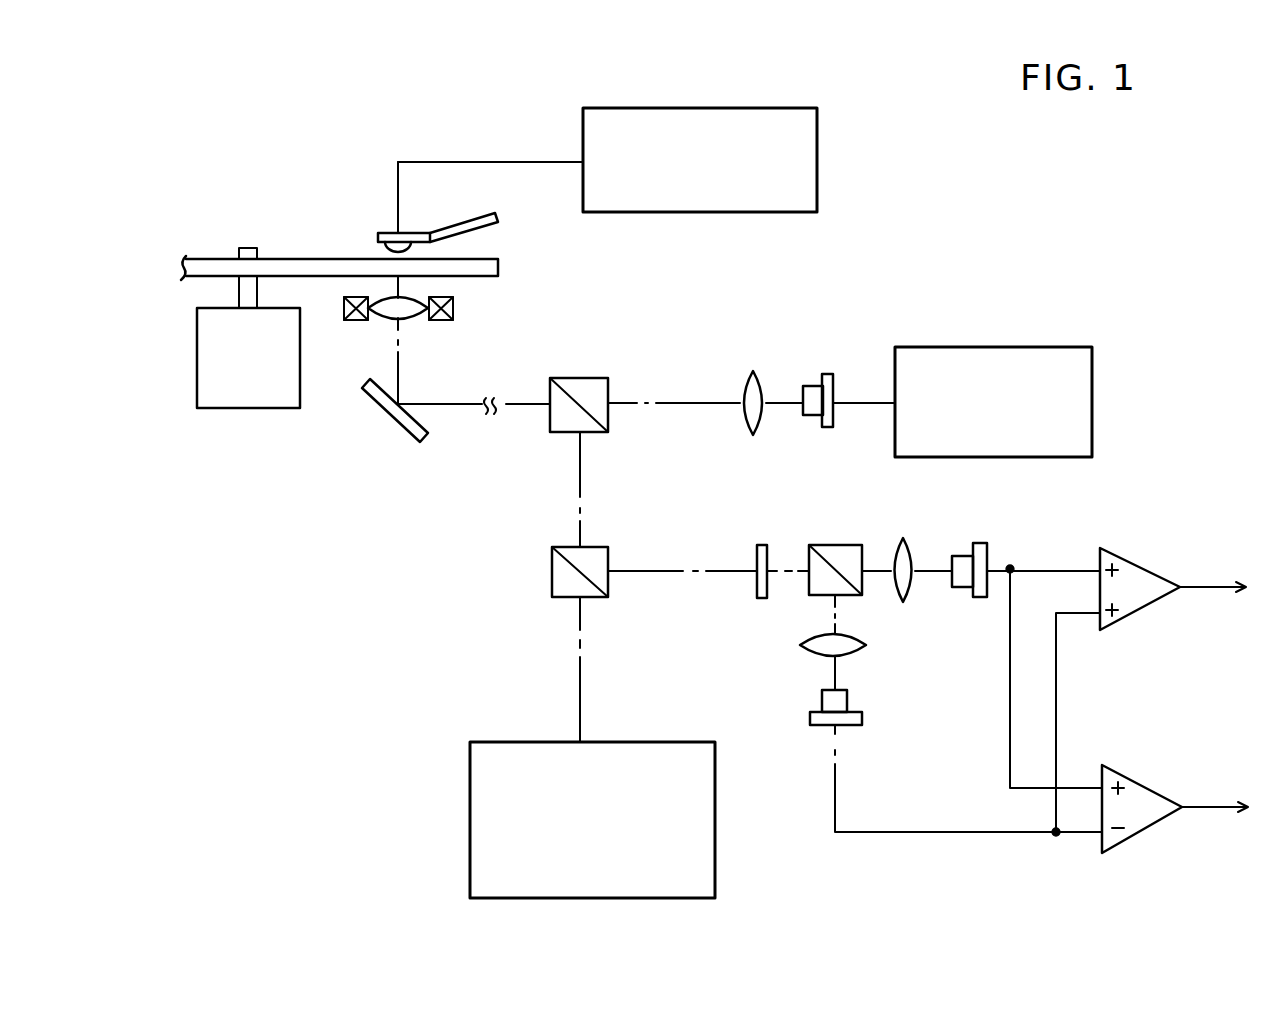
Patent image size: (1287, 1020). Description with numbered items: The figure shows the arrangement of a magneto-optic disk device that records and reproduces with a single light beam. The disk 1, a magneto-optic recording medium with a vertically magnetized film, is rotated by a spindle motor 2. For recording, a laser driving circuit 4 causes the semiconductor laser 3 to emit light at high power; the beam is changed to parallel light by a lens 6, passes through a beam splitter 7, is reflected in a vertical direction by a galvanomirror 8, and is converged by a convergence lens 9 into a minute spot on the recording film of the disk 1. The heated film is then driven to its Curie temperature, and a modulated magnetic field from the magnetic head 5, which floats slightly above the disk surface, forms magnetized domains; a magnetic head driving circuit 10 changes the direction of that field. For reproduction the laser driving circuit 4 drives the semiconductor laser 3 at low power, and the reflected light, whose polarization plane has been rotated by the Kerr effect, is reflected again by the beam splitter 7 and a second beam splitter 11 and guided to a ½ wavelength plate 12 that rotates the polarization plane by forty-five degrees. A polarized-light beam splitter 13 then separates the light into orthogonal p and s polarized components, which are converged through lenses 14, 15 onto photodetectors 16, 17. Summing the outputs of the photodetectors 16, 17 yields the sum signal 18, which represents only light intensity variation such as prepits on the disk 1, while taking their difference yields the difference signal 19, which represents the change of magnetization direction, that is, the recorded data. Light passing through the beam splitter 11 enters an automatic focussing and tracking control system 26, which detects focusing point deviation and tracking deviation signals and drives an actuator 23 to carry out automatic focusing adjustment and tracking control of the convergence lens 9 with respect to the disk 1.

The disk 1 is at (306, 260).
The spindle motor 2 is at (250, 408).
The semiconductor laser 3 is at (830, 374).
The laser driving circuit 4 is at (1003, 347).
The magnetic head 5 is at (385, 233).
The lens 6 is at (758, 370).
The beam splitter 7 is at (582, 378).
The galvanomirror 8 is at (386, 414).
The convergence lens 9 is at (410, 320).
The magnetic head driving circuit 10 is at (817, 150).
The beam splitter 11 is at (552, 575).
The ½ wavelength plate 12 is at (763, 545).
The polarized-light beam splitter 13 is at (838, 545).
The lens 14 is at (910, 547).
The lens 15 is at (800, 645).
The photodetector 16 is at (978, 543).
The photodetector 17 is at (818, 725).
The sum signal 18 is at (1181, 585).
The difference signal 19 is at (1190, 810).
The actuator 23 is at (453, 305).
The automatic focussing and tracking control system 26 is at (470, 820).